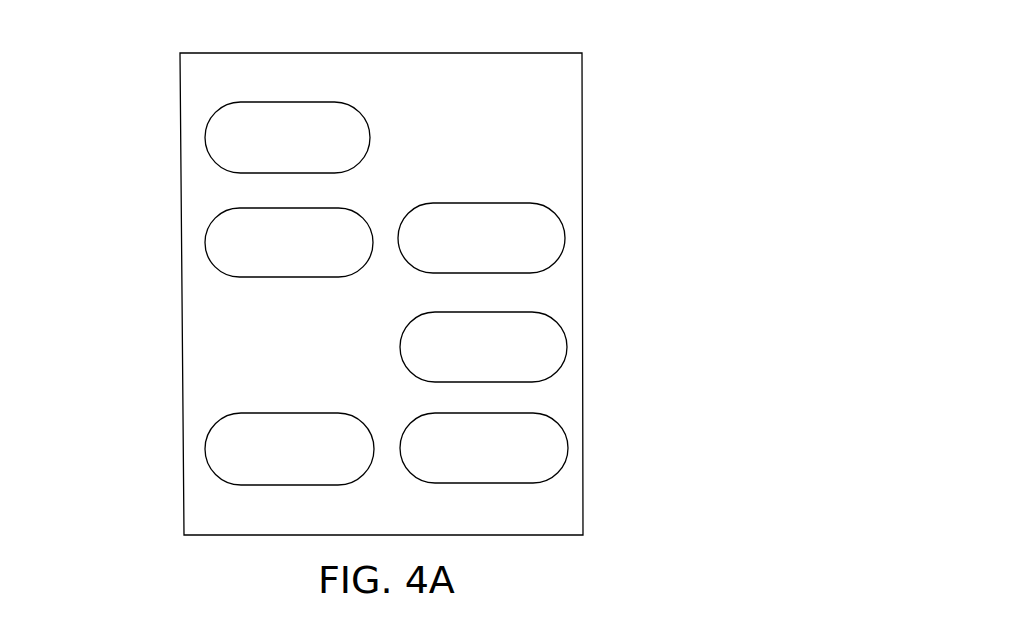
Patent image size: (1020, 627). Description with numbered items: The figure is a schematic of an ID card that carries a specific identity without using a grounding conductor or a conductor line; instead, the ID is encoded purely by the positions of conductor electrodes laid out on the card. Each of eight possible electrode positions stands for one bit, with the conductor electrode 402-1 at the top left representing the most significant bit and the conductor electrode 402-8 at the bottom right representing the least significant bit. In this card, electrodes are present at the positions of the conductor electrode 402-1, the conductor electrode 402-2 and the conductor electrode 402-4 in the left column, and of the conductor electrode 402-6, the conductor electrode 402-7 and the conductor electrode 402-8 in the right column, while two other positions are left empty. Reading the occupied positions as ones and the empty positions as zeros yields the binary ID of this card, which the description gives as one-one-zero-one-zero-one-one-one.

The conductor electrode 402-1 is at (216, 117).
The conductor electrode 402-2 is at (216, 244).
The conductor electrode 402-4 is at (216, 478).
The conductor electrode 402-6 is at (522, 252).
The conductor electrode 402-7 is at (525, 360).
The conductor electrode 402-8 is at (545, 480).